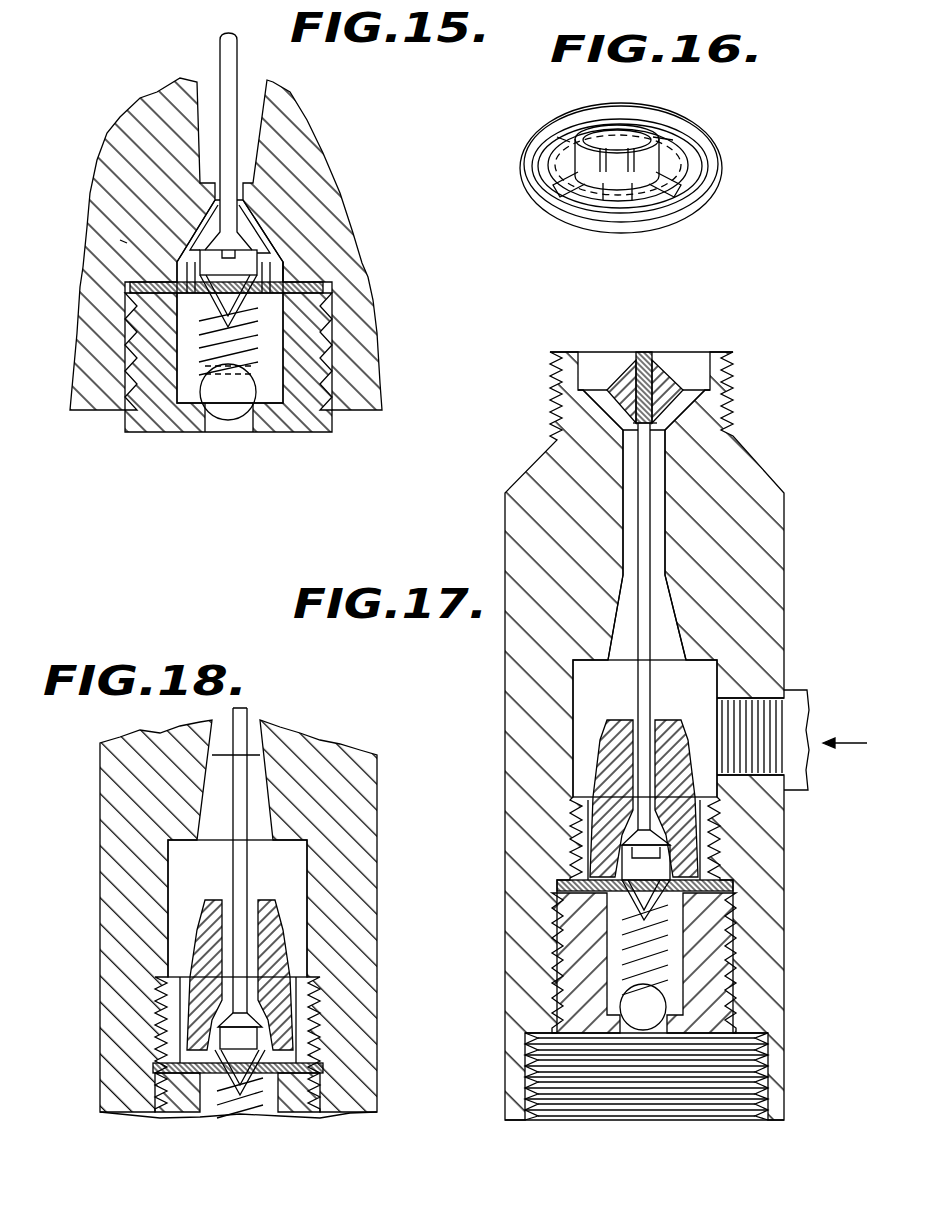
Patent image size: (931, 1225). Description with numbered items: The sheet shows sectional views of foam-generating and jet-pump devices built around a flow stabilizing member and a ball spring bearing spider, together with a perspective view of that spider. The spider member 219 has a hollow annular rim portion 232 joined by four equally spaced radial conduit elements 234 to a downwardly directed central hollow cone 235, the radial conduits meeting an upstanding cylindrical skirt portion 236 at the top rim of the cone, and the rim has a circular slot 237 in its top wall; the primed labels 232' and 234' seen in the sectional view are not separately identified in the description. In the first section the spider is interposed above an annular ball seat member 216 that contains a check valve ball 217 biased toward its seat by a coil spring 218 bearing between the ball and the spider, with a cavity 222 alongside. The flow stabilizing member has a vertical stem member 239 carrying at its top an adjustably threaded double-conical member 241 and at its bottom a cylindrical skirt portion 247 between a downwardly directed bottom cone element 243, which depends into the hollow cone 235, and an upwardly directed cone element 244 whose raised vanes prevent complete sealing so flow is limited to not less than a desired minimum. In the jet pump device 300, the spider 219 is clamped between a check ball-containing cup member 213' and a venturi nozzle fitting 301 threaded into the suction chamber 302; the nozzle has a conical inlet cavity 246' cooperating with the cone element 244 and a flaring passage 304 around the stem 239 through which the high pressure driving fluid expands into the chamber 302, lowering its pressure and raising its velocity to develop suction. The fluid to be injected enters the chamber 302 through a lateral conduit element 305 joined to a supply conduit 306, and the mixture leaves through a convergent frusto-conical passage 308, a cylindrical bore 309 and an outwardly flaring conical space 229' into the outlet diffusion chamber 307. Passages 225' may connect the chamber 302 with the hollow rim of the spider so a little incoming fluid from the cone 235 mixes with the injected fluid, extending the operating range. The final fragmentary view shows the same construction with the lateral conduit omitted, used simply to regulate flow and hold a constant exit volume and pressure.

In FIG. 17, the check ball-containing cup member 213' is at (607, 1006).
In FIG. 18, the check ball-containing cup member 213' is at (218, 1126).
In FIG. 15, the annular ball seat member 216 is at (303, 407).
In FIG. 15, the check valve ball 217 is at (230, 413).
In FIG. 17, the check valve ball 217 is at (657, 1007).
In FIG. 15, the coil spring 218 is at (180, 377).
In FIG. 17, the coil spring 218 is at (670, 967).
In FIG. 18, the coil spring 218 is at (262, 1120).
In FIG. 16, the spider member 219 is at (722, 173).
In FIG. 17, the spider member 219 is at (727, 880).
In FIG. 18, the spider member 219 is at (323, 1063).
In FIG. 15, the cavity 222 is at (137, 117).
In FIG. 17, the passages 225' is at (574, 840).
In FIG. 17, the outwardly flaring conical space 229' is at (719, 383).
In FIG. 16, the hollow annular rim portion 232 is at (638, 177).
In FIG. 15, the flange 232' is at (284, 273).
In FIG. 16, the radial conduit elements 234 is at (629, 186).
In FIG. 15, the lug 234' is at (79, 221).
In FIG. 15, the central hollow cone 235 is at (250, 308).
In FIG. 16, the central hollow cone 235 is at (613, 203).
In FIG. 17, the central hollow cone 235 is at (653, 910).
In FIG. 15, the cylindrical skirt portion 236 is at (260, 250).
In FIG. 16, the cylindrical skirt portion 236 is at (613, 133).
In FIG. 16, the circular slot 237 is at (557, 140).
In FIG. 15, the stem member 239 is at (233, 65).
In FIG. 17, the stem member 239 is at (645, 497).
In FIG. 18, the stem member 239 is at (242, 868).
In FIG. 17, the double-conical member 241 is at (657, 360).
In FIG. 15, the bottom cone element 243 is at (285, 253).
In FIG. 17, the bottom cone element 243 is at (627, 400).
In FIG. 18, the bottom cone element 243 is at (222, 1080).
In FIG. 15, the upwardly directed cone element 244 is at (240, 233).
In FIG. 17, the conical inlet cavity 246' is at (525, 826).
In FIG. 15, the cylindrical skirt portion 247 is at (247, 253).
In FIG. 17, the injection or pump device 300 is at (788, 537).
In FIG. 18, the injection or pump device 300 is at (380, 998).
In FIG. 17, the venturi nozzle fitting 301 is at (615, 718).
In FIG. 18, the venturi nozzle fitting 301 is at (205, 900).
In FIG. 17, the suction chamber 302 is at (693, 663).
In FIG. 17, the flaring passage 304 is at (660, 723).
In FIG. 18, the flaring passage 304 is at (250, 903).
In FIG. 17, the lateral conduit element 305 is at (757, 698).
In FIG. 17, the supply conduit 306 is at (797, 717).
In FIG. 17, the outlet diffusion chamber 307 is at (600, 362).
In FIG. 17, the convergent frusto-conical passage 308 is at (617, 587).
In FIG. 17, the cylindrical bore 309 is at (623, 462).